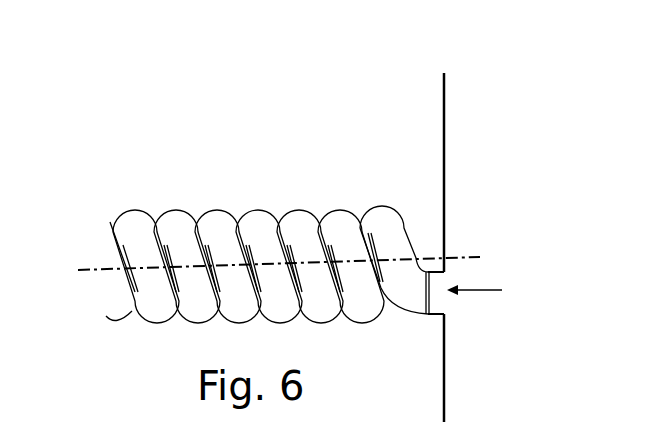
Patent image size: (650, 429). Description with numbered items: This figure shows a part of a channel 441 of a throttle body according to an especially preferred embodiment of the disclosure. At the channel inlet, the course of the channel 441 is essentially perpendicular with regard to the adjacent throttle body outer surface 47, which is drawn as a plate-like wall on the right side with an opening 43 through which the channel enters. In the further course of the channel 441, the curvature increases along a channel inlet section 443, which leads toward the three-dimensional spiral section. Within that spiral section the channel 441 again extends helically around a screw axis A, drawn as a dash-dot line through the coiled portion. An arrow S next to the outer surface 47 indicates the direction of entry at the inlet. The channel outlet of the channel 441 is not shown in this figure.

The channel 441 is at (232, 190).
The channel inlet section 443 is at (396, 304).
The throttle body outer surface 47 is at (450, 152).
The slot 43 is at (452, 301).
The screw axis A is at (78, 270).
The direction of force S is at (493, 288).